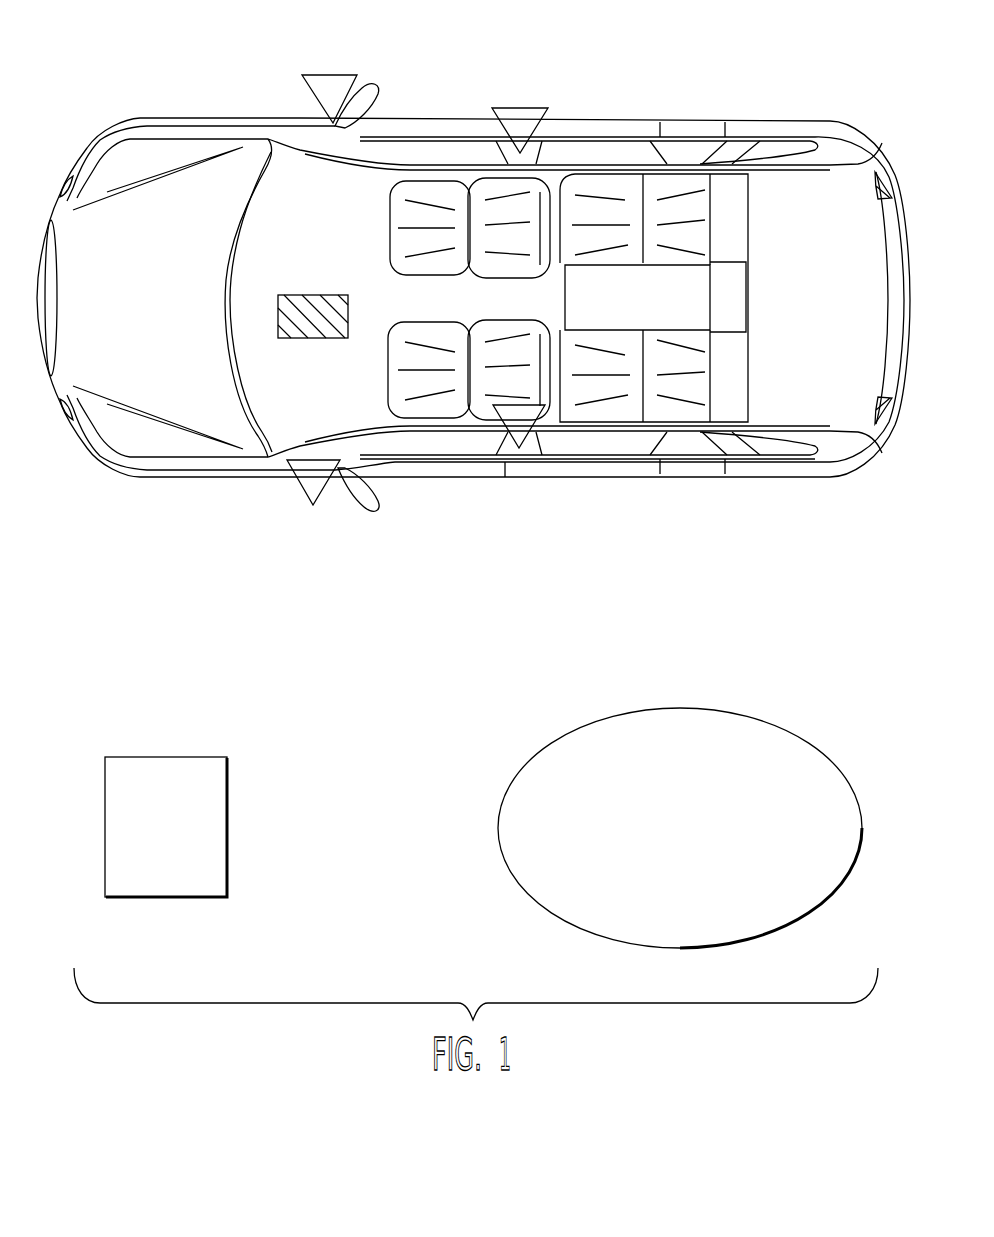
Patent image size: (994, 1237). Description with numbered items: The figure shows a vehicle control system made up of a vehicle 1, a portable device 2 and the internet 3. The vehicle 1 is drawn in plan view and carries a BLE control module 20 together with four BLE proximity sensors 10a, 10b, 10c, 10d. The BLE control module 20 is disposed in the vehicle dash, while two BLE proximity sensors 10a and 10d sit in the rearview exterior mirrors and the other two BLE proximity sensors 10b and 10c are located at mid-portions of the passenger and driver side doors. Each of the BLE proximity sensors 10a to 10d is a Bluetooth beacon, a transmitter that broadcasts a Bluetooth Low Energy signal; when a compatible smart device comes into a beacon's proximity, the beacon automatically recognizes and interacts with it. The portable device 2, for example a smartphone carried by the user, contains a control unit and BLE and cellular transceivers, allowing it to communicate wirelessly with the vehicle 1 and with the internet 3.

The vehicle 1 is at (777, 145).
The BLE control module 20 is at (306, 300).
The BLE proximity sensor 10a is at (334, 75).
The BLE proximity sensor 10b is at (522, 108).
The BLE proximity sensor 10c is at (533, 430).
The BLE proximity sensor 10d is at (298, 478).
The portable device 2 is at (215, 782).
The internet 3 is at (720, 722).